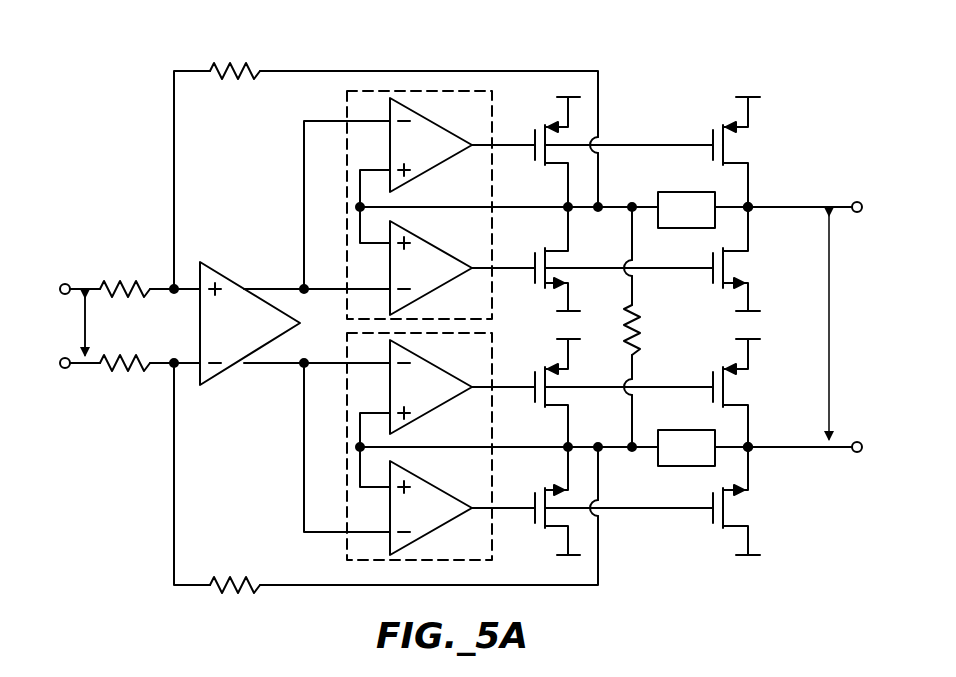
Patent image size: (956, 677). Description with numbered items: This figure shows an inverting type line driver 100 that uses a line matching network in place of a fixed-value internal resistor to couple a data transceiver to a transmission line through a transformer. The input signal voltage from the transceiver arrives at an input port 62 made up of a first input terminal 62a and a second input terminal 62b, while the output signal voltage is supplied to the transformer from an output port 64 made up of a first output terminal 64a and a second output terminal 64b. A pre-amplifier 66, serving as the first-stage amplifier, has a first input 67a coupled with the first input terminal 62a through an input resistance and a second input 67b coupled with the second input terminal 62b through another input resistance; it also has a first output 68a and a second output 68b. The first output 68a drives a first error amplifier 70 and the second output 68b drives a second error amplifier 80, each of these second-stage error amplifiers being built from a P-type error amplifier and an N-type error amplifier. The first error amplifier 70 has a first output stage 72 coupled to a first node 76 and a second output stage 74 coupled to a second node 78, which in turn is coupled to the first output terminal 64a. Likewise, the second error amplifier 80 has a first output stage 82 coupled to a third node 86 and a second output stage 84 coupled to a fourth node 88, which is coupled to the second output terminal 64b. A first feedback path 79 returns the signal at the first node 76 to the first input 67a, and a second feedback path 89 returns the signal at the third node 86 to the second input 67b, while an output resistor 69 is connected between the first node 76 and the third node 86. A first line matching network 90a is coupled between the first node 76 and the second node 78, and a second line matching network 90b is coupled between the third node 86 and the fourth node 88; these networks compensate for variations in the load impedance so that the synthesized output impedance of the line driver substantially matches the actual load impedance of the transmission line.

The line driver circuit 100 is at (624, 53).
The input port 62 is at (90, 458).
The first input terminal 62a is at (67, 282).
The second input terminal 62b is at (67, 370).
The first input 67a is at (172, 285).
The second input 67b is at (172, 367).
The pre-amplifier 66 is at (215, 266).
The first output 68a is at (302, 285).
The second output 68b is at (302, 367).
The first feedback path 79 is at (311, 70).
The second feedback path 89 is at (349, 587).
The first error amplifier 70 is at (494, 106).
The second error amplifier 80 is at (494, 533).
The first output stage 72 is at (562, 170).
The first output stage 82 is at (562, 410).
The second output stage 74 is at (742, 171).
The second output stage 84 is at (742, 409).
The first node 76 is at (601, 204).
The third node 86 is at (601, 451).
The output resistor 69 is at (639, 322).
The first line matching network 90a is at (698, 229).
The second line matching network 90b is at (698, 468).
The second node 78 is at (753, 210).
The fourth node 88 is at (753, 444).
The output port 64 is at (834, 505).
The first output terminal 64a is at (855, 203).
The second output terminal 64b is at (855, 452).